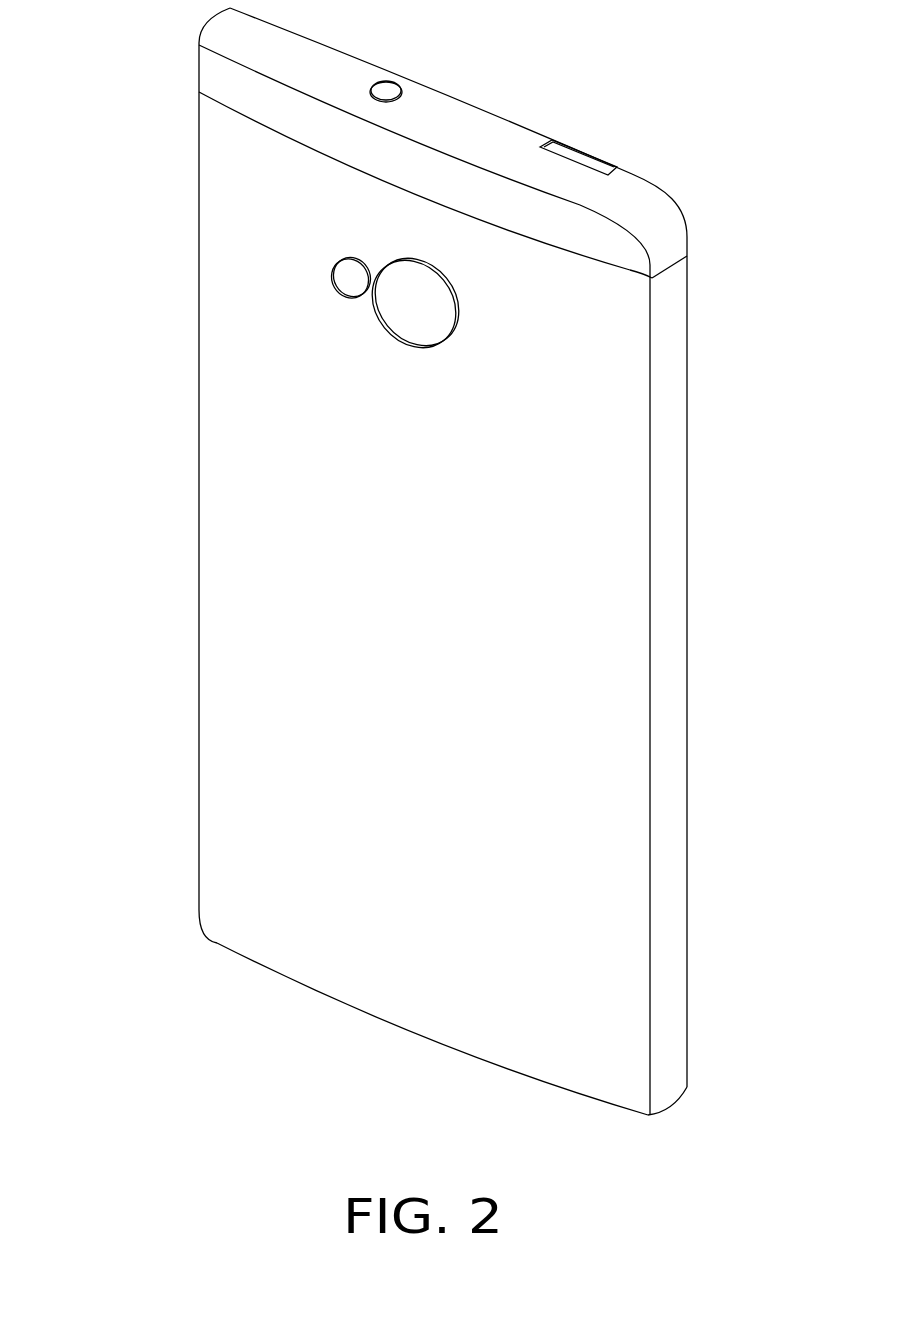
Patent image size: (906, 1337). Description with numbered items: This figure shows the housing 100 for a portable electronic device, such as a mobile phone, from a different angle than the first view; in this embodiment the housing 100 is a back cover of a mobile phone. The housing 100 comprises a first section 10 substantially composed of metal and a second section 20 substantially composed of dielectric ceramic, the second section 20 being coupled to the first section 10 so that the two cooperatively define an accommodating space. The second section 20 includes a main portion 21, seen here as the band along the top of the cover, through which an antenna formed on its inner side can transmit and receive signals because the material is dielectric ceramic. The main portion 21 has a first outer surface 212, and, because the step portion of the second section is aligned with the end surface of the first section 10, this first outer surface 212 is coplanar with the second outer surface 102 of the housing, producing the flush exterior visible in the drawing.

The housing 100 is at (419, 561).
The first section 10 is at (455, 579).
The second outer surface 102 is at (617, 368).
The second section 20 is at (459, 143).
The main portion 21 is at (640, 197).
The first outer surface 212 is at (598, 232).